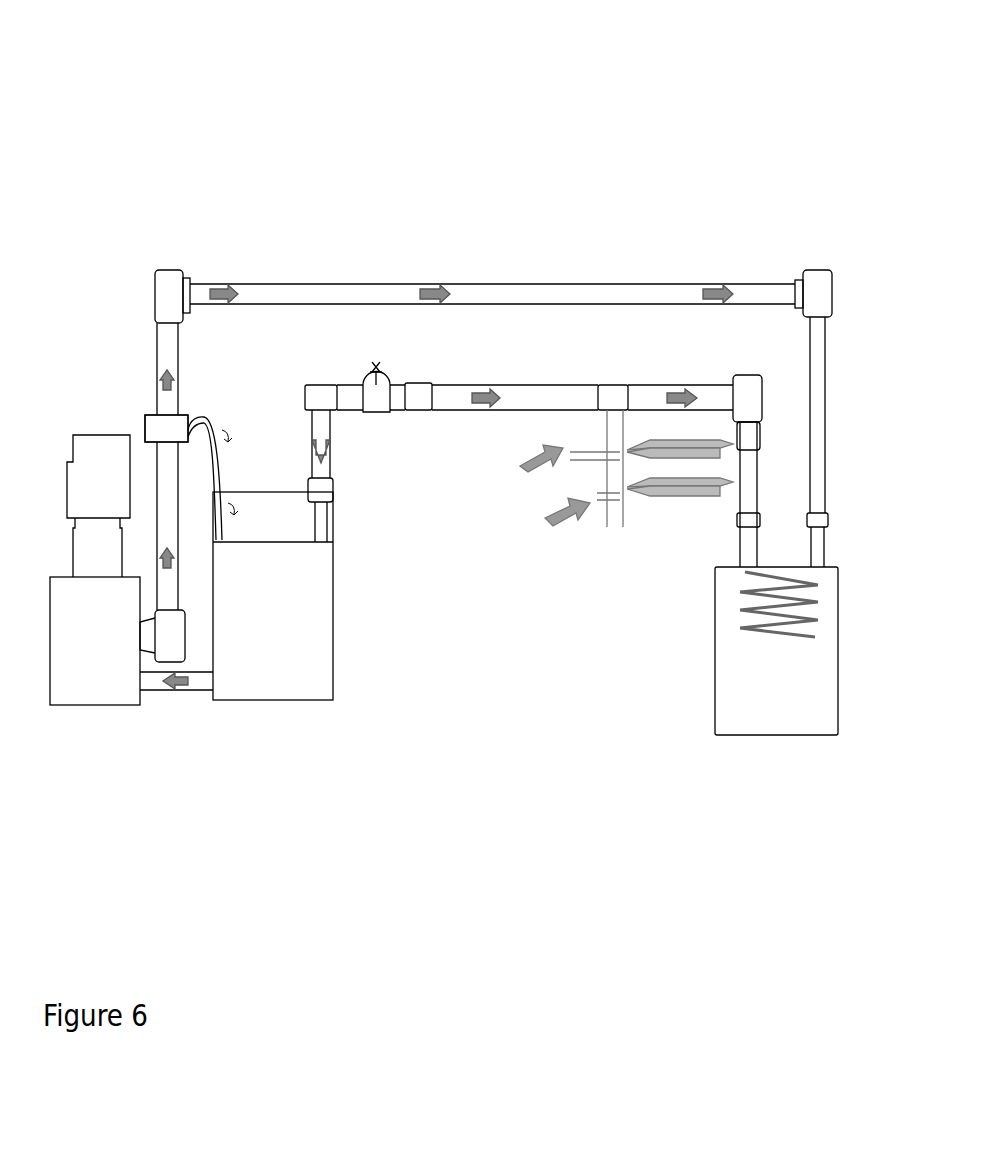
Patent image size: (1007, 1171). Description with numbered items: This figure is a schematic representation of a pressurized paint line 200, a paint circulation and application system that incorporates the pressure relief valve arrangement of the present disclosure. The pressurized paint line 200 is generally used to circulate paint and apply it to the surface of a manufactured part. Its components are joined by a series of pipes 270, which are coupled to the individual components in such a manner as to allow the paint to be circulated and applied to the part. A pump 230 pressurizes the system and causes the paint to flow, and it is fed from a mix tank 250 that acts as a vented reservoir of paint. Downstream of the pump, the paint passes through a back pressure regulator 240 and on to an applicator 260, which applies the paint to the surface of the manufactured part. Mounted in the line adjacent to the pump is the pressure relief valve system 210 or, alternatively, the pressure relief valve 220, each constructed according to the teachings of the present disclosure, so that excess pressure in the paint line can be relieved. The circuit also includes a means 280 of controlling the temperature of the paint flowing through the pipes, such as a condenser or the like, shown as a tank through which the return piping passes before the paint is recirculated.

The pressurized paint line 200 is at (563, 112).
The pressure relief valve system 210 is at (134, 355).
The pressure relief valve 220 is at (157, 427).
The pump 230 is at (100, 478).
The back pressure regulator 240 is at (373, 393).
The mix tank 250 is at (265, 640).
The applicator 260 is at (568, 520).
The pipes 270 is at (820, 360).
The means of controlling the temperature 280 is at (760, 677).